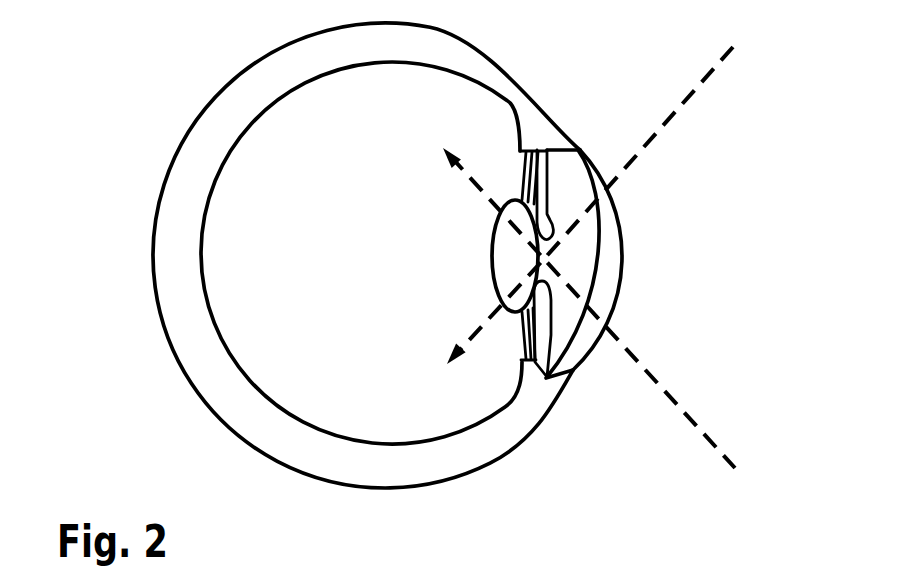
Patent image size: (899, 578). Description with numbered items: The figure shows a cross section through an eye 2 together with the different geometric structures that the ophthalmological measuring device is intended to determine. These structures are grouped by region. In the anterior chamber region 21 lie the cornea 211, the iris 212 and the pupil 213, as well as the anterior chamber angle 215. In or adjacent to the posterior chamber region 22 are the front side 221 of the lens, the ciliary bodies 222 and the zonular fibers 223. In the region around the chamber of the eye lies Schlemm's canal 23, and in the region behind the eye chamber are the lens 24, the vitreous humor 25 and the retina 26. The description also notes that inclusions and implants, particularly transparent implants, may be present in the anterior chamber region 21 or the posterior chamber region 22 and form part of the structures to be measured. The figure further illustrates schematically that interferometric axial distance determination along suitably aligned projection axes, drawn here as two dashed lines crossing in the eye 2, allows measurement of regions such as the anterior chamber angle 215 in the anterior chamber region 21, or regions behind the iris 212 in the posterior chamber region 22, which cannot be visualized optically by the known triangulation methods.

The eye 2 is at (178, 427).
The anterior chamber region 21 is at (649, 331).
The cornea 211 is at (588, 333).
The iris 212 is at (545, 228).
The pupil 213 is at (545, 259).
The anterior chamber angle 215 is at (563, 190).
The posterior chamber region 22 is at (535, 150).
The front side of the lens 221 is at (603, 264).
The ciliary bodies 222 is at (535, 372).
The zonular fibers 223 is at (503, 353).
The Schlemm's canal 23 is at (550, 138).
The lens 24 is at (493, 253).
The vitreous humor 25 is at (305, 250).
The retina 26 is at (206, 338).